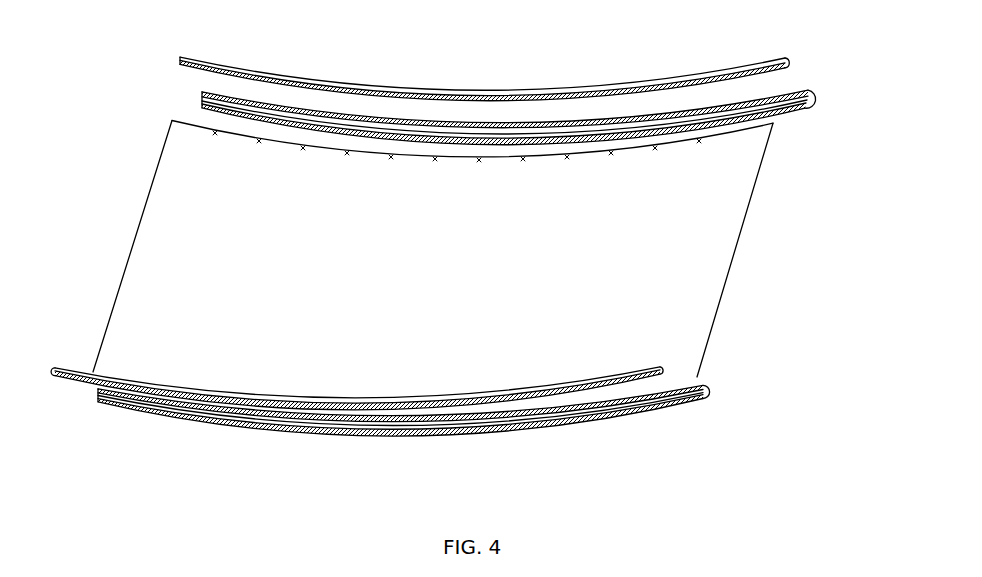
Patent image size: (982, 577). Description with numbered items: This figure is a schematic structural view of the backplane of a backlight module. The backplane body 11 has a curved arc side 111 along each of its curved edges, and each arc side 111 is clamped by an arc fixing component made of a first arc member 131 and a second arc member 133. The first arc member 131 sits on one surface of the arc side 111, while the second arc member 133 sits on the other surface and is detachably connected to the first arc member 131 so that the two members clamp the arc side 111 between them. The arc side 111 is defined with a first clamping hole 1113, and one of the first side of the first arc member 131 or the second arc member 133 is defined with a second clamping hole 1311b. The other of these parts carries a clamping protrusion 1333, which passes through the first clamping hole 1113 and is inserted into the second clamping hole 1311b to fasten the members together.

The backplane body 11 is at (730, 255).
The arc side 111 is at (763, 133).
The first clamping hole 1113 is at (700, 143).
The first arc member 131 is at (782, 108).
The second clamping hole 1311b is at (768, 108).
The second arc member 133 is at (677, 83).
The clamping protrusion 1333 is at (750, 75).